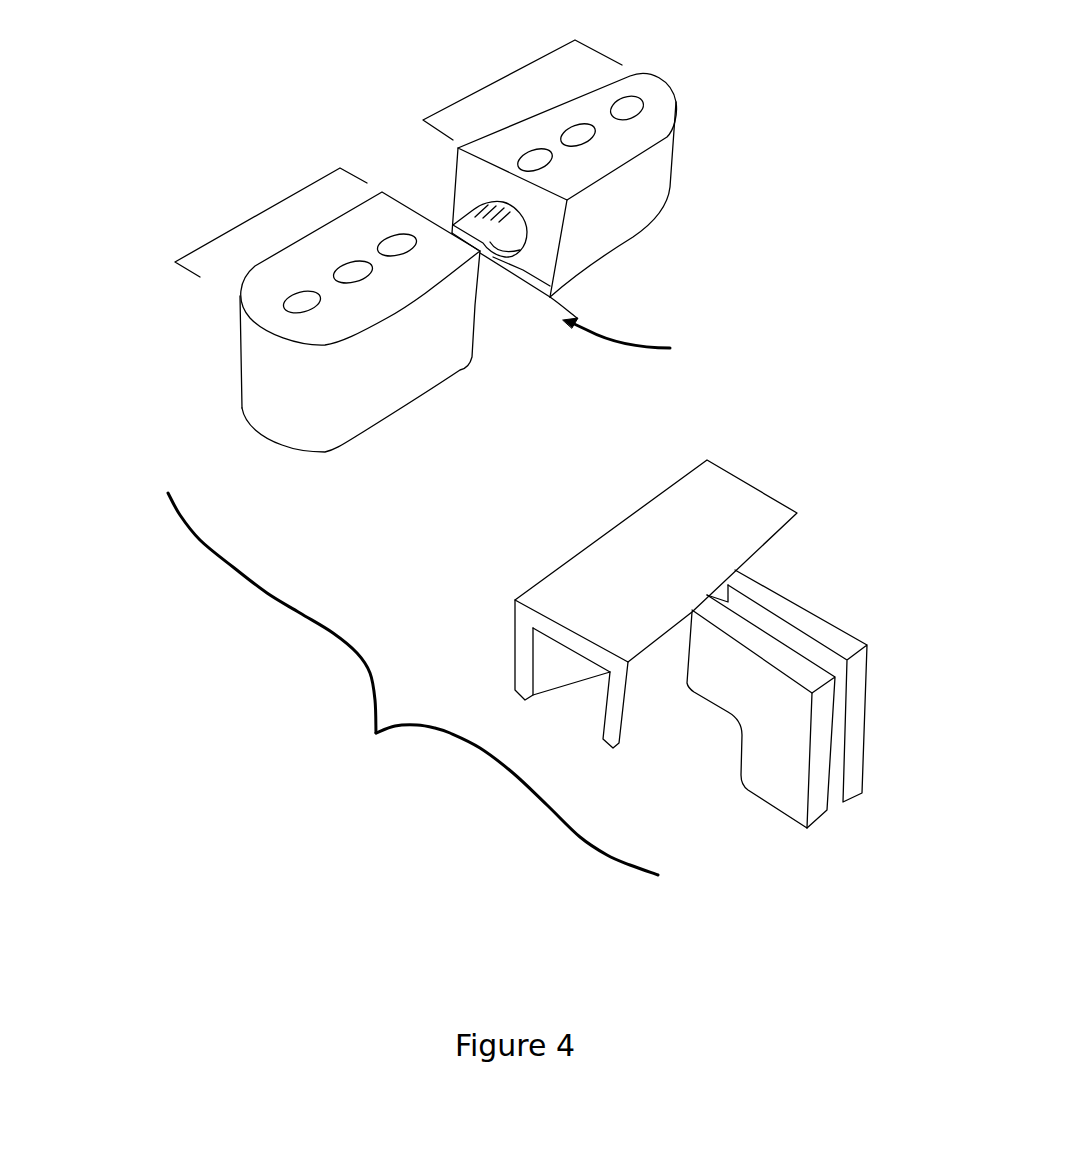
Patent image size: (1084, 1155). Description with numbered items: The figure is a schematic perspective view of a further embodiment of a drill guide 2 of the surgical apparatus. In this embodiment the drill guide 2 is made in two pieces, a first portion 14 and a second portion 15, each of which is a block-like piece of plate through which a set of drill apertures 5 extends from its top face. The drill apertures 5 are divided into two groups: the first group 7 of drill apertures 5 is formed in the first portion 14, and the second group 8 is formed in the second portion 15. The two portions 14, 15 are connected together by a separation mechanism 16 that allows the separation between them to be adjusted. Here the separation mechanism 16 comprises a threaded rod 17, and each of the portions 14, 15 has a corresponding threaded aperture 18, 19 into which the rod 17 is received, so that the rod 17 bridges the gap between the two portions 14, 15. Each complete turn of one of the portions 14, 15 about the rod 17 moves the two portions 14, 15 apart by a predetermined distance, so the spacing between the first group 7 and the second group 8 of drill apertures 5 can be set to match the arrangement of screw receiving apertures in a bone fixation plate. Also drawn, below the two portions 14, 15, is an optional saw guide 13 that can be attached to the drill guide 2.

The drill guide 2 is at (413, 684).
The drill apertures 5 is at (636, 102).
The first group of drill apertures 7 is at (267, 207).
The second group of drill apertures 8 is at (507, 77).
The saw guide 13 is at (747, 507).
The first portion 14 is at (658, 192).
The second portion 15 is at (350, 410).
The separation mechanism 16 is at (634, 339).
The threaded rod 17 is at (454, 230).
The threaded aperture 18 is at (488, 278).
The threaded aperture 19 is at (553, 283).